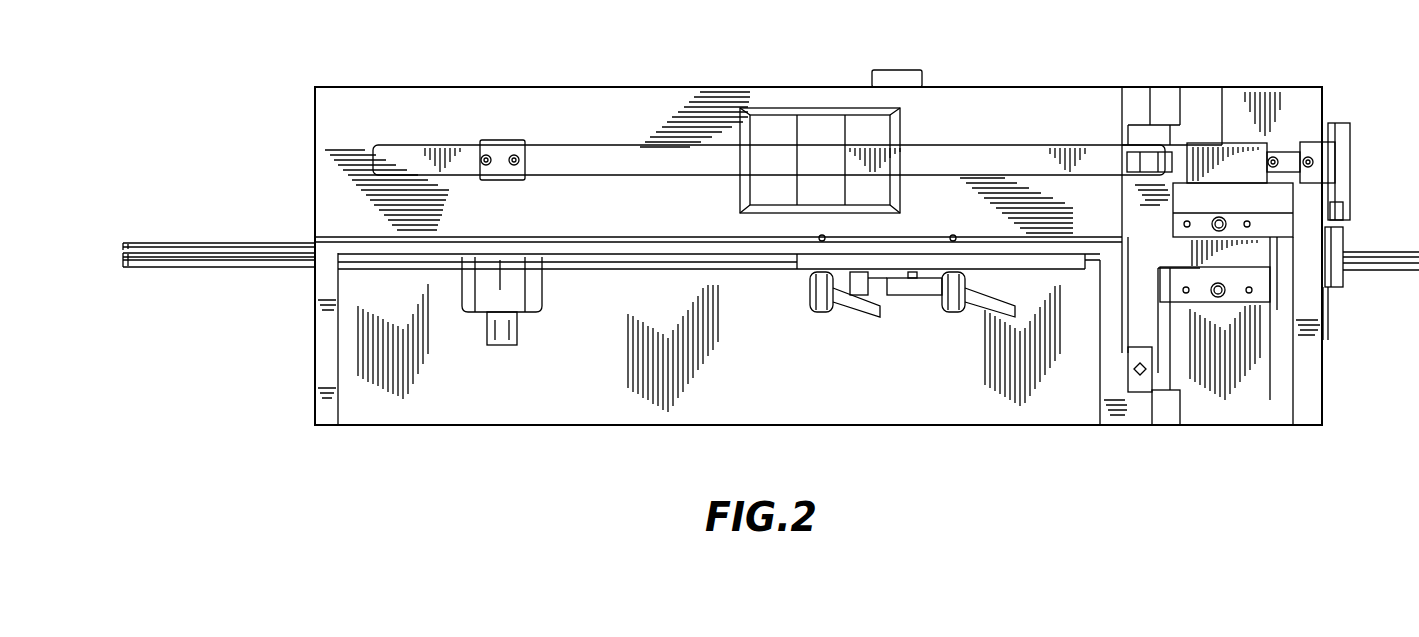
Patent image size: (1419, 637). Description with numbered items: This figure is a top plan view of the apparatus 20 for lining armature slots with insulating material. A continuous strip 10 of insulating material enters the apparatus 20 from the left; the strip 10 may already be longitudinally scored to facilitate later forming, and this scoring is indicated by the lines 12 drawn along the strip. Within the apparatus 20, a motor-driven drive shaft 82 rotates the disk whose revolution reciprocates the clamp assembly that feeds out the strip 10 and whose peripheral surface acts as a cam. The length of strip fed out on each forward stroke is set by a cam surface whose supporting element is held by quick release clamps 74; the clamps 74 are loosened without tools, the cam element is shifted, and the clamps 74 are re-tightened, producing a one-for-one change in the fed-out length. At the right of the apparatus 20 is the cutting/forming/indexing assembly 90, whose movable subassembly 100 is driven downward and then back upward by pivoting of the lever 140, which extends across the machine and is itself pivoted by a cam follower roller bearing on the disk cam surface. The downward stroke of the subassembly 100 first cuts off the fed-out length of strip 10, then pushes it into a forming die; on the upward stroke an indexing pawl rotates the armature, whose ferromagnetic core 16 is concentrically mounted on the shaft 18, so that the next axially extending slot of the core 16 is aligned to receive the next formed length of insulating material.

The apparatus 20 is at (384, 46).
The lever 140 is at (560, 156).
The scoring lines 12 is at (175, 266).
The strip of insulating material 10 is at (256, 270).
The drive shaft 82 is at (510, 328).
The quick release clamps 74 is at (866, 312).
The cutting/forming/indexing assembly 90 is at (1272, 80).
The movable subassembly 100 is at (1264, 410).
The ferromagnetic core 16 is at (1332, 288).
The shaft 18 is at (1367, 255).